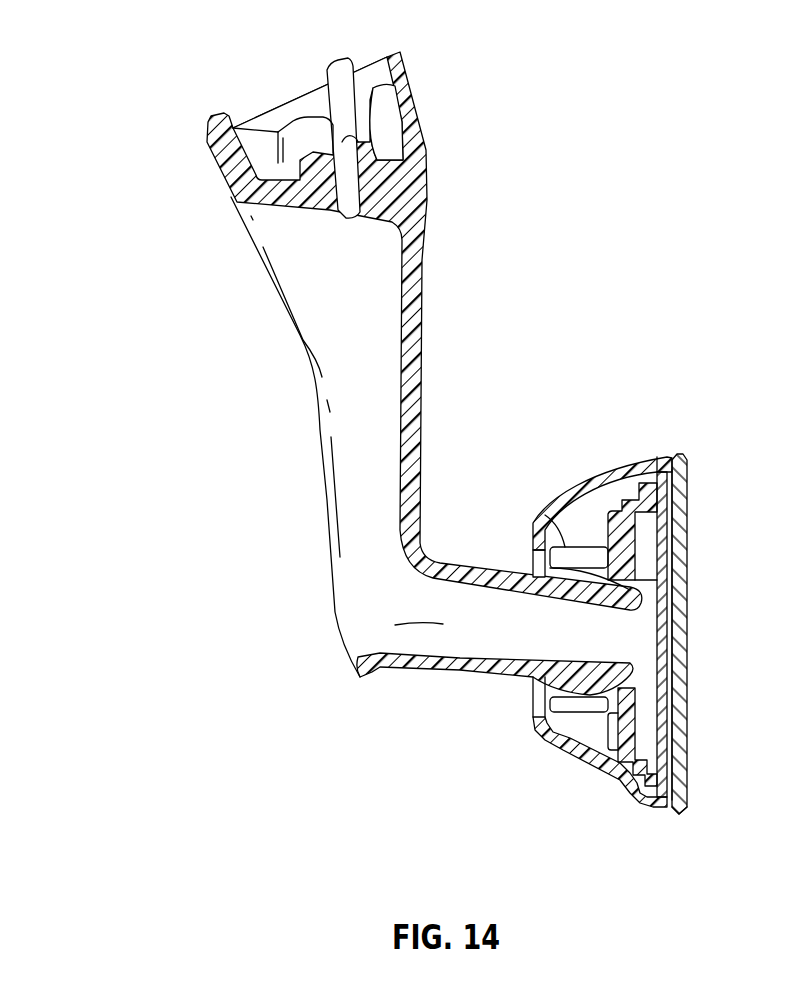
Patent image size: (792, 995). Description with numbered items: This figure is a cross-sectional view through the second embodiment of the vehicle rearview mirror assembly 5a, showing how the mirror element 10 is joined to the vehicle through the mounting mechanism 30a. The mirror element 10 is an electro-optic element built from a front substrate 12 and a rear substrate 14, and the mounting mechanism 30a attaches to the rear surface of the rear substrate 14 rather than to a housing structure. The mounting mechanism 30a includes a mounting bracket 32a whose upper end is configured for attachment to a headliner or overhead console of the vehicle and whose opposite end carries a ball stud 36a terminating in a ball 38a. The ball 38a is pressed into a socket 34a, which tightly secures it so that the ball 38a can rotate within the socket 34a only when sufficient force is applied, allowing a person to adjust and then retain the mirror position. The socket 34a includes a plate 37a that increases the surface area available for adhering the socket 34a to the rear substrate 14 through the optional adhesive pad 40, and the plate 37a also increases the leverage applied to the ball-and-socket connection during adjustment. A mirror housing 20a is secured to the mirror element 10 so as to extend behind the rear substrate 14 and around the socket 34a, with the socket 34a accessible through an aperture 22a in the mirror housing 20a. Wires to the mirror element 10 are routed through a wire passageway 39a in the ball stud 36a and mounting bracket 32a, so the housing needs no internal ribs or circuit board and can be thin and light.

The rearview mirror assembly 5a is at (648, 282).
The mirror element 10 is at (682, 820).
The front substrate 12 is at (673, 460).
The rear substrate 14 is at (672, 583).
The mirror housing 20a is at (654, 464).
The aperture 22a is at (530, 704).
The mounting mechanism 30a is at (280, 598).
The mounting bracket 32a is at (427, 156).
The socket 34a is at (536, 518).
The ball stud 36a is at (417, 667).
The plate 37a is at (649, 466).
The ball 38a is at (587, 690).
The wire passageway 39a is at (395, 625).
The adhesive pad 40 is at (662, 526).